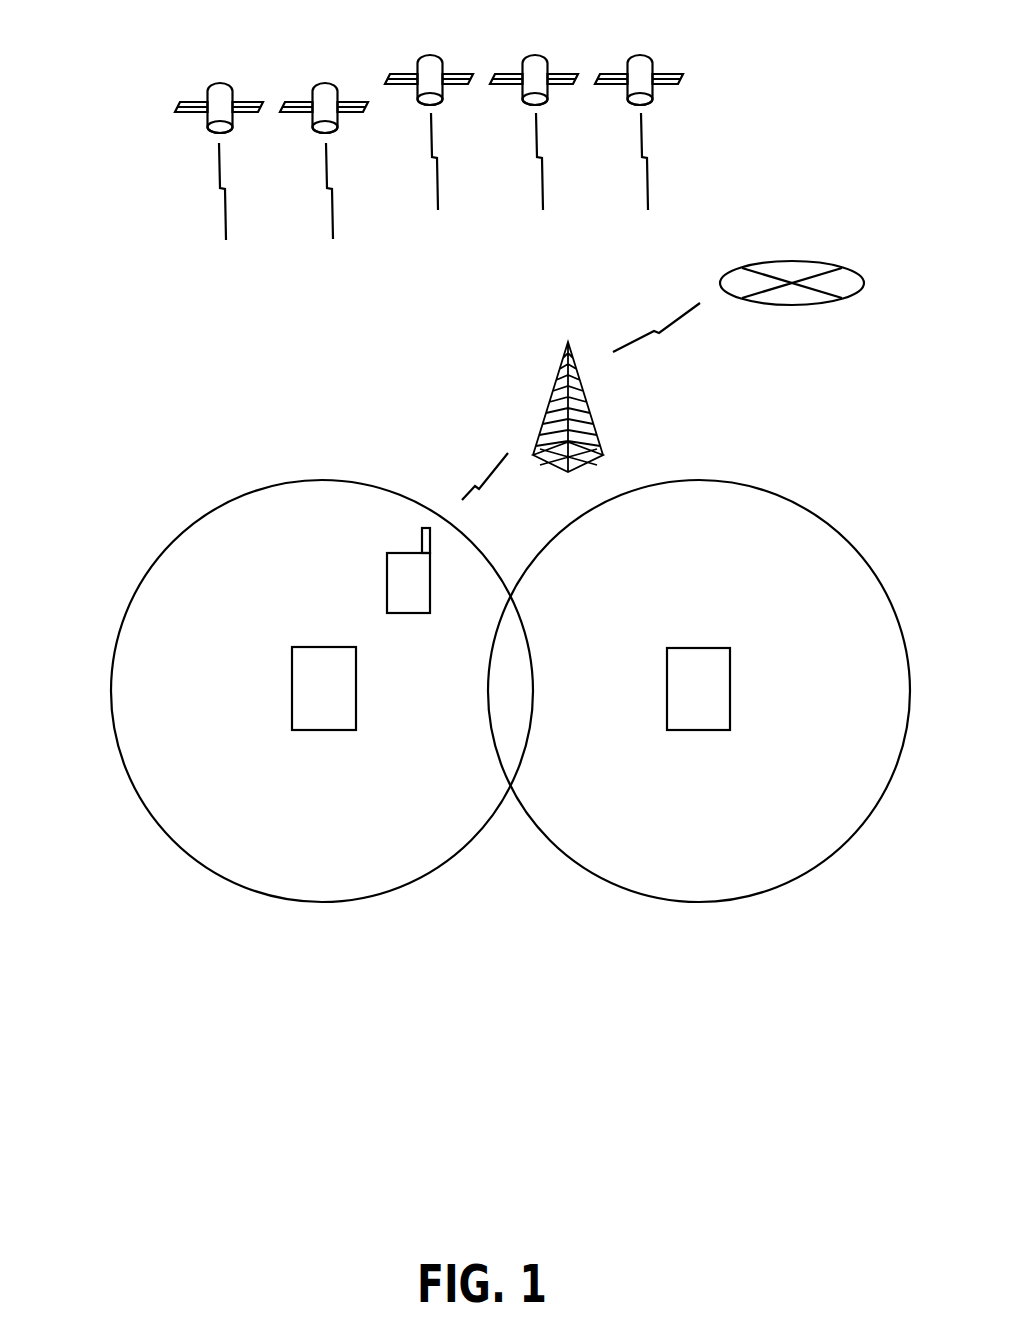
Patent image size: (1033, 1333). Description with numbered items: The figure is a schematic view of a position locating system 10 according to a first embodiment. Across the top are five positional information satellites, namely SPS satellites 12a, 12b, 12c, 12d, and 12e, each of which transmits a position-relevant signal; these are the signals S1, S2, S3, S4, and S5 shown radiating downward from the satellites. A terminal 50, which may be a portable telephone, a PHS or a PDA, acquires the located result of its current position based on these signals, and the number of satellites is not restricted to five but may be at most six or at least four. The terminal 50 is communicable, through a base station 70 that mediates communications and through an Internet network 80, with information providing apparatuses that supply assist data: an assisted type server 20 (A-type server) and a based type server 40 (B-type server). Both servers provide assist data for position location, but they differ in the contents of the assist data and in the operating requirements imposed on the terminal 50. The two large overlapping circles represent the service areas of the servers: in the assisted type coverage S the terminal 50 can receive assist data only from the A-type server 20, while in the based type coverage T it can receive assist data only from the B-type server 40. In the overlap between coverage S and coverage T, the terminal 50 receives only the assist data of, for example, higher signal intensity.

The position locating system 10 is at (747, 59).
The SPS satellite 12a is at (217, 83).
The SPS satellite 12b is at (324, 83).
The SPS satellite 12c is at (429, 55).
The SPS satellite 12d is at (534, 55).
The SPS satellite 12e is at (639, 55).
The signal S1 is at (218, 172).
The signal S2 is at (326, 172).
The signal S3 is at (431, 144).
The signal S4 is at (534, 144).
The signal S5 is at (639, 144).
The Internet network 80 is at (790, 261).
The base station 70 is at (568, 342).
The terminal 50 is at (387, 583).
The assisted type server 20 is at (325, 731).
The based type server 40 is at (698, 731).
The assisted type coverage S is at (325, 900).
The based type coverage T is at (698, 899).